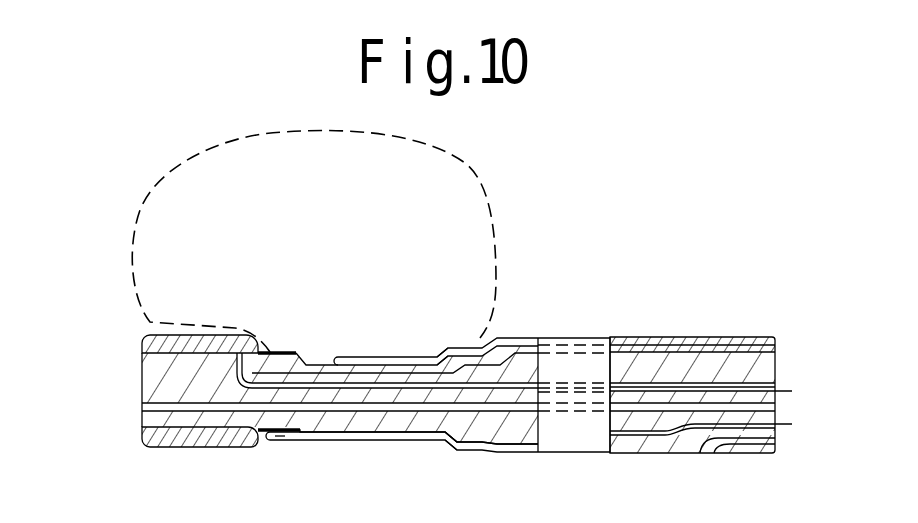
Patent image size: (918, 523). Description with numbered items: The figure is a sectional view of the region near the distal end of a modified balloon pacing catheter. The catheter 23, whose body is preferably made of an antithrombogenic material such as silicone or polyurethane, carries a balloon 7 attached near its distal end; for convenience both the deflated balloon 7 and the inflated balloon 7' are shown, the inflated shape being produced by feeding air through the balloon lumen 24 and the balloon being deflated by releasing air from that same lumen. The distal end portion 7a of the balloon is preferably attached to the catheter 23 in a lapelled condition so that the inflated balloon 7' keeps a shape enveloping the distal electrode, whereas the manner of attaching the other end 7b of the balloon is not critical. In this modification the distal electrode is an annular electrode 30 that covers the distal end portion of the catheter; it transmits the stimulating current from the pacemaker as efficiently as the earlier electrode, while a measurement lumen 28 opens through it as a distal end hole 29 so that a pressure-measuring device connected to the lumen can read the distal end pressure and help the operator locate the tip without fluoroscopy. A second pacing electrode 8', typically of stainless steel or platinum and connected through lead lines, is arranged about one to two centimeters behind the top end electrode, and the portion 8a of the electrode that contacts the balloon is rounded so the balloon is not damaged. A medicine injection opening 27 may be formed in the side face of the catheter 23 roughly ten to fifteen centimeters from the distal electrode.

The inflated balloon 7' is at (331, 241).
The balloon 7 is at (402, 424).
The distal end portion of the balloon 7a is at (290, 440).
The other end of the balloon 7b is at (484, 338).
The second pacing electrode 8' is at (434, 428).
The rounded portion of the electrode 8a is at (258, 450).
The catheter 23 is at (535, 460).
The balloon lumen 24 is at (651, 347).
The medicine injection opening 27 is at (717, 453).
The measurement lumen 28 is at (218, 450).
The distal end hole 29 is at (142, 402).
The annular electrode 30 is at (160, 450).